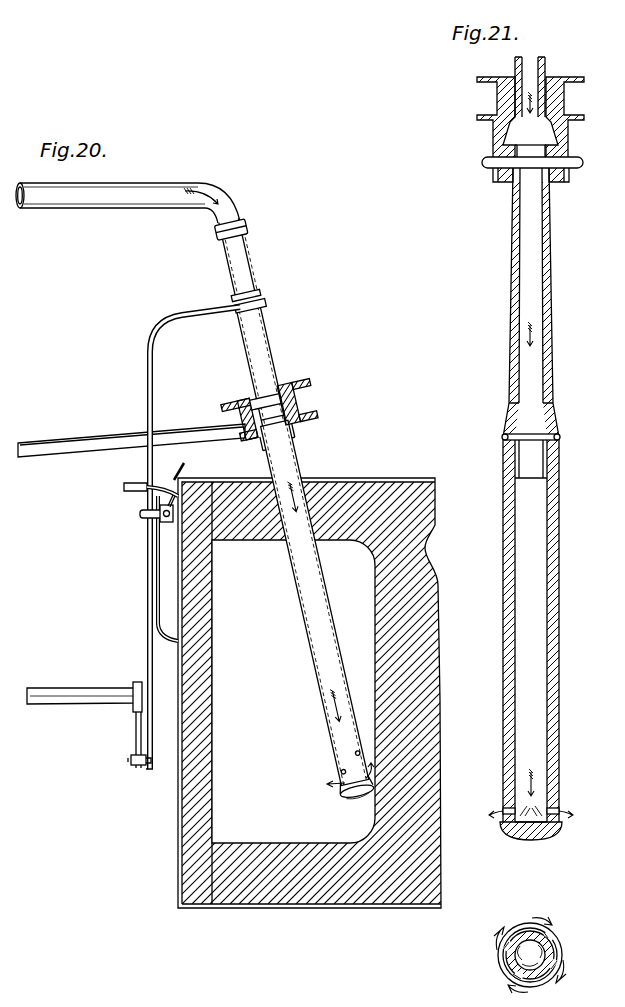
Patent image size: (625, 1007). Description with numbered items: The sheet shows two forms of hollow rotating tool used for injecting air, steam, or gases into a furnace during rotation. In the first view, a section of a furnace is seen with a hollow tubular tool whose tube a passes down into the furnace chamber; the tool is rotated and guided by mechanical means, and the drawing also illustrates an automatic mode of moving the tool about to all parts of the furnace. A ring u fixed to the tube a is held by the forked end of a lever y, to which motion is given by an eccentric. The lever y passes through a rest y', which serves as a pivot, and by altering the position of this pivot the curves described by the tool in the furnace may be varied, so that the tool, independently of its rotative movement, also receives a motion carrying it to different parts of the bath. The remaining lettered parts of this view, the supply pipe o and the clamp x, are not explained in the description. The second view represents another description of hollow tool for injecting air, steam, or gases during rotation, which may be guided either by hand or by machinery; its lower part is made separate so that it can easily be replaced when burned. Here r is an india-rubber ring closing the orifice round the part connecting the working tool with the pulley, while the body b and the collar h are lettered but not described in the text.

In FIG. 20, the supply pipe o is at (128, 203).
In FIG. 20, the tube a is at (293, 509).
In FIG. 20, the ring u is at (237, 308).
In FIG. 20, the lever y is at (182, 532).
In FIG. 20, the rest y' is at (148, 509).
In FIG. 20, the clamp screw x is at (90, 725).
In FIG. 21, the nozzle body b is at (530, 117).
In FIG. 21, the collar h is at (566, 152).
In FIG. 21, the india-rubber ring r is at (531, 182).